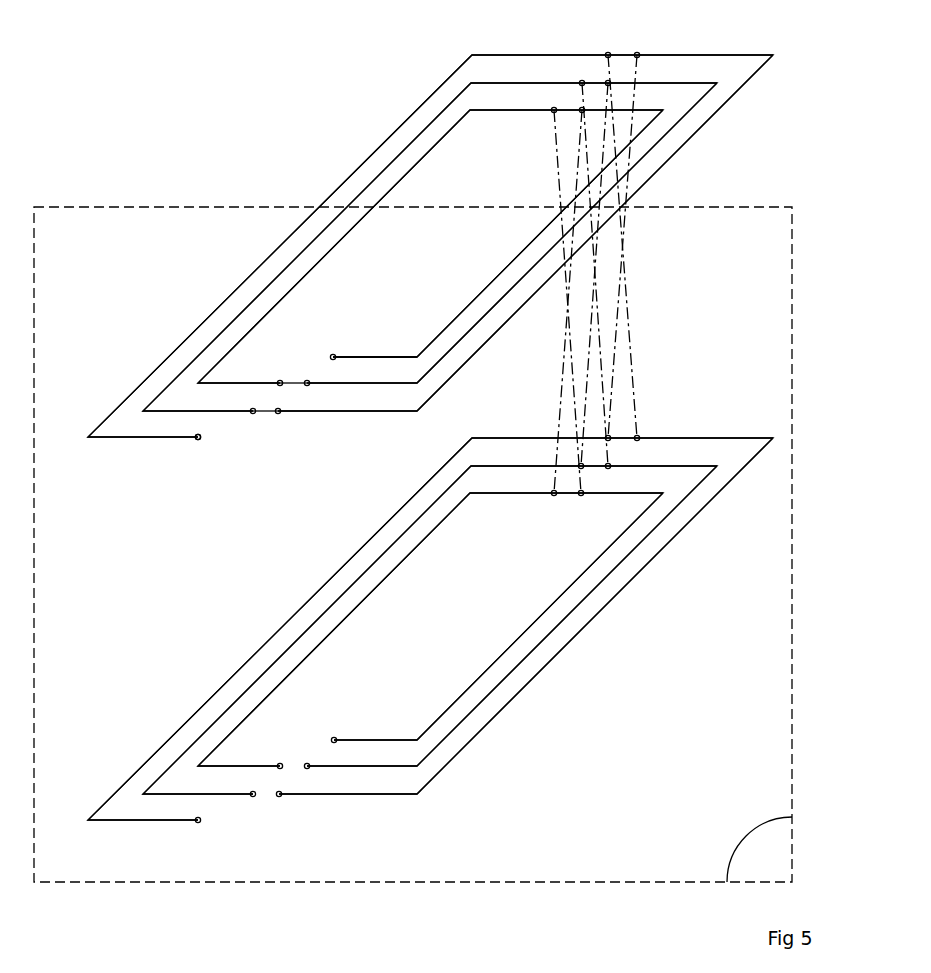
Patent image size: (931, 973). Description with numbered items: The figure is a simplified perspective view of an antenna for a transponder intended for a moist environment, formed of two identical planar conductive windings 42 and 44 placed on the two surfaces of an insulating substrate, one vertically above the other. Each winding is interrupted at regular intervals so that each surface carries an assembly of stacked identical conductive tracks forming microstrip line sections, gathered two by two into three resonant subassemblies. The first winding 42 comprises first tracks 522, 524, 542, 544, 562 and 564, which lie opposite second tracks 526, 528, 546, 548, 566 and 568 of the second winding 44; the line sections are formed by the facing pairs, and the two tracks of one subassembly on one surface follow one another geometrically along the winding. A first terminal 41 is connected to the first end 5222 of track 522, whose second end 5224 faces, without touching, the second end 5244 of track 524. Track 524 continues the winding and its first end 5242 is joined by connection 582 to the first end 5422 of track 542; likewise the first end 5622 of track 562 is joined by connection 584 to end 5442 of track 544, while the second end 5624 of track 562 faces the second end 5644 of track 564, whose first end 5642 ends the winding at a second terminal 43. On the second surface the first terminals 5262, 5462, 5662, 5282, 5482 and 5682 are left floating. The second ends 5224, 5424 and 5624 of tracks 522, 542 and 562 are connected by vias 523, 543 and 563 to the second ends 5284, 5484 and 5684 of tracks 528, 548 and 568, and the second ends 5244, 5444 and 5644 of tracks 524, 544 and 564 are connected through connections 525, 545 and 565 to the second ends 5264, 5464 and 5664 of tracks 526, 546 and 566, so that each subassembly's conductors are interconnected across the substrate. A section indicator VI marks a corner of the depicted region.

The first terminal 41 is at (198, 437).
The first planar conductive winding 42 is at (372, 99).
The second terminal 43 is at (333, 357).
The second planar conductive winding 44 is at (570, 754).
The first track of first subassembly 522 is at (180, 345).
The second first-surface track of first subassembly 524 is at (646, 182).
The first second-surface track of first subassembly 526 is at (240, 670).
The second second-surface track of first subassembly 528 is at (620, 592).
The first track of second subassembly 542 is at (279, 275).
The second first-surface track of second subassembly 544 is at (673, 125).
The first second-surface track of second subassembly 546 is at (337, 600).
The second second-surface track of second subassembly 548 is at (556, 628).
The first track of third subassembly 562 is at (397, 186).
The second first-surface track of third subassembly 564 is at (456, 318).
The first second-surface track of third subassembly 566 is at (375, 590).
The second second-surface track of third subassembly 568 is at (493, 663).
The connection 582 is at (265, 411).
The connection 584 is at (292, 382).
The via 523 is at (633, 377).
The electric connection 525 is at (617, 347).
The via 543 is at (613, 317).
The electric connection 545 is at (575, 318).
The via 563 is at (570, 387).
The electric connection 565 is at (558, 420).
The first end of track 522 5222 is at (198, 437).
The second end of track 522 5224 is at (608, 55).
The first end of track 524 5242 is at (278, 411).
The second end of track 524 5244 is at (637, 55).
The first terminal of track 526 5262 is at (198, 820).
The second end of track 526 5264 is at (608, 438).
The first terminal of track 528 5282 is at (279, 794).
The second end of track 528 5284 is at (637, 438).
The first end of track 542 5422 is at (253, 411).
The second end of track 542 5424 is at (582, 83).
The end of track 544 5442 is at (307, 383).
The second end of track 544 5444 is at (608, 83).
The first terminal of track 546 5462 is at (253, 794).
The second end of track 546 5464 is at (581, 466).
The first terminal of track 548 5482 is at (307, 766).
The second end of track 548 5484 is at (608, 466).
The first end of track 562 5622 is at (280, 383).
The second end of track 562 5624 is at (554, 110).
The first end of track 564 5642 is at (412, 352).
The second end of track 564 5644 is at (582, 110).
The first terminal of track 566 5662 is at (280, 766).
The second end of track 566 5664 is at (554, 493).
The first terminal of track 568 5682 is at (334, 740).
The second end of track 568 5684 is at (581, 493).
The section indicator VI is at (759, 849).